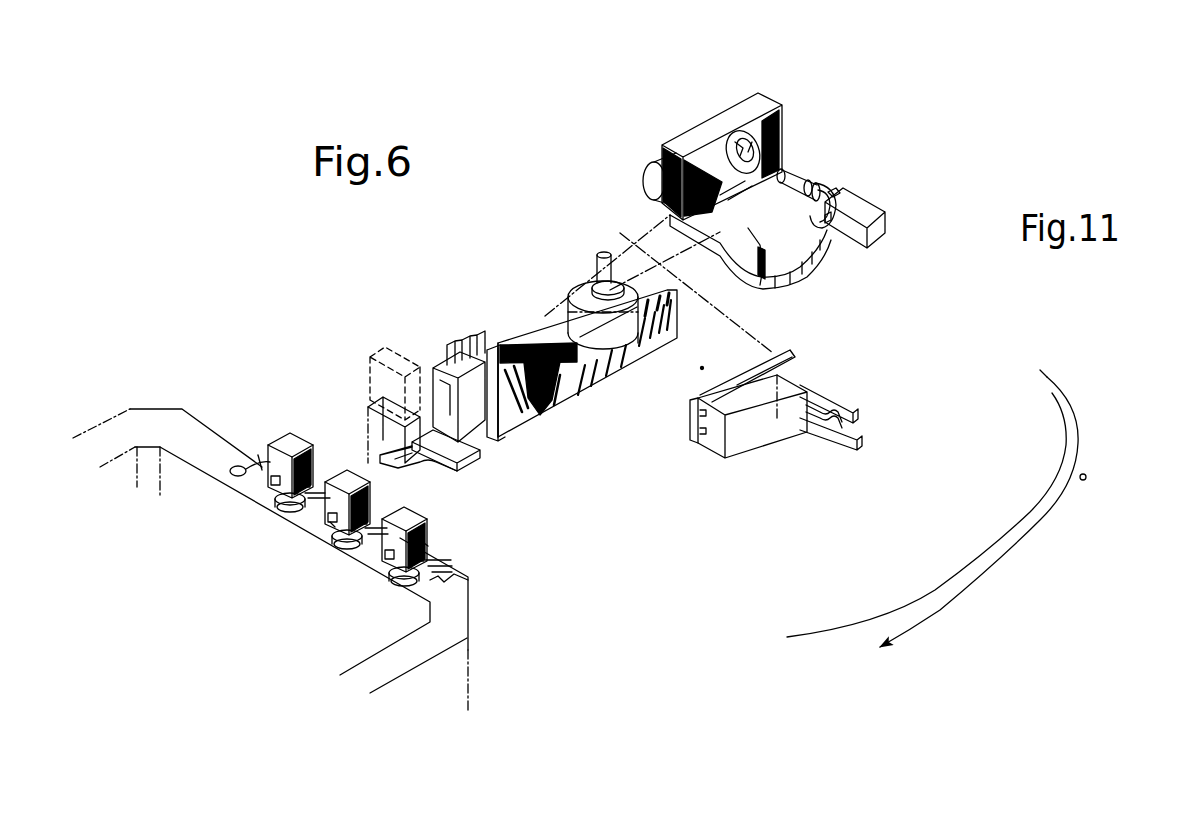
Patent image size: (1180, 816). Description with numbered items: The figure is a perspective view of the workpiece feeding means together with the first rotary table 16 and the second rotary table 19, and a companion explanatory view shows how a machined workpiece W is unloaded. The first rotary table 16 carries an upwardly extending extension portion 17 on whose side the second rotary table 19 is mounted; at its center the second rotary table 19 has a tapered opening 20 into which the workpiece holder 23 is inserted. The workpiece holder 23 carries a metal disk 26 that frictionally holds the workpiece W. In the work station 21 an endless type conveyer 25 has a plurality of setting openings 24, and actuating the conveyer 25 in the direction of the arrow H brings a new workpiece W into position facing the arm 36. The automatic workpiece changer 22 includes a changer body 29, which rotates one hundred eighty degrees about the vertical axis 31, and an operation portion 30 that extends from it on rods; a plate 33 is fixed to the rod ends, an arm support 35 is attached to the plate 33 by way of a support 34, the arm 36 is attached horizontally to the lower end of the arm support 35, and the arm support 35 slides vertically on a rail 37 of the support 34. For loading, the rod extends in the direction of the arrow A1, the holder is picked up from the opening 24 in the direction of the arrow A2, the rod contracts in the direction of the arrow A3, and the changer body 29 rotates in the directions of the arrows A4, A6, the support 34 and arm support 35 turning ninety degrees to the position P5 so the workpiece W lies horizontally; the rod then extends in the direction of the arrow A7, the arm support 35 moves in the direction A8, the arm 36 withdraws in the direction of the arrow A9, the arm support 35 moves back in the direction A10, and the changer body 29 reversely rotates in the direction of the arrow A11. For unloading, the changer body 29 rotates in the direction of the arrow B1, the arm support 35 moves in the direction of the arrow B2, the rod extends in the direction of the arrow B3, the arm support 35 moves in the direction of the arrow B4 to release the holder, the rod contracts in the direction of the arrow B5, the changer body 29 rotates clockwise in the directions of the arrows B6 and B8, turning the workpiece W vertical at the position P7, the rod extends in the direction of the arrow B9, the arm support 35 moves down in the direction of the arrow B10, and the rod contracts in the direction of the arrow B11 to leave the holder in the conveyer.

In FIG. 6, the first rotary table 16 is at (807, 247).
In FIG. 6, the extension portion 17 is at (662, 145).
In FIG. 6, the second rotary table 19 is at (723, 140).
In FIG. 6, the tapered opening 20 is at (760, 147).
In FIG. 6, the work station 21 is at (180, 397).
In FIG. 6, the automatic workpiece changer 22 is at (520, 262).
In FIG. 6, the workpiece holder 23 is at (323, 534).
In FIG. 6, the setting opening 24 is at (231, 477).
In FIG. 6, the endless type conveyer 25 is at (261, 463).
In FIG. 6, the metal disk 26 is at (432, 546).
In FIG. 6, the changer body 29 is at (553, 317).
In FIG. 6, the operation portion 30 is at (373, 347).
In FIG. 6, the vertical axis 31 is at (600, 262).
In FIG. 6, the plate 33 is at (512, 424).
In FIG. 6, the support 34 is at (493, 340).
In FIG. 6, the arm support 35 is at (440, 377).
In FIG. 6, the arm 36 is at (448, 484).
In FIG. 6, the rail 37 is at (467, 333).
In FIG. 6, the workpiece W is at (297, 441).
In FIG. 6, the conveyer actuation direction H is at (320, 563).
In FIG. 6, the rod extension direction A1 is at (465, 487).
In FIG. 6, the pick-up direction A2 is at (353, 437).
In FIG. 6, the rod contraction direction A3 is at (410, 338).
In FIG. 6, the changer body rotation direction A4 is at (648, 378).
In FIG. 6, the changer body rotation direction A6 is at (735, 350).
In FIG. 6, the rod extension direction A7 is at (817, 278).
In FIG. 6, the arm support movement direction A8 is at (823, 160).
In FIG. 6, the arm removal direction A9 is at (756, 172).
In FIG. 6, the arm support return direction A10 is at (745, 241).
In FIG. 6, the reverse rotation direction A11 is at (722, 330).
In FIG. 6, the position P5 is at (702, 368).
In FIG. 11, the counterclockwise rotation direction B1 is at (902, 624).
In FIG. 11, the arm support movement direction B2 is at (1042, 373).
In FIG. 11, the rod extension direction B3 is at (1043, 313).
In FIG. 11, the arm support release direction B4 is at (1055, 308).
In FIG. 11, the rod contraction direction B5 is at (1062, 365).
In FIG. 11, the clockwise rotation direction B6 is at (1058, 368).
In FIG. 11, the clockwise rotation direction B8 is at (967, 607).
In FIG. 11, the rod extension direction B9 is at (863, 655).
In FIG. 11, the arm support descent direction B10 is at (806, 738).
In FIG. 11, the rod contraction direction B11 is at (813, 736).
In FIG. 11, the position P7 is at (1086, 480).